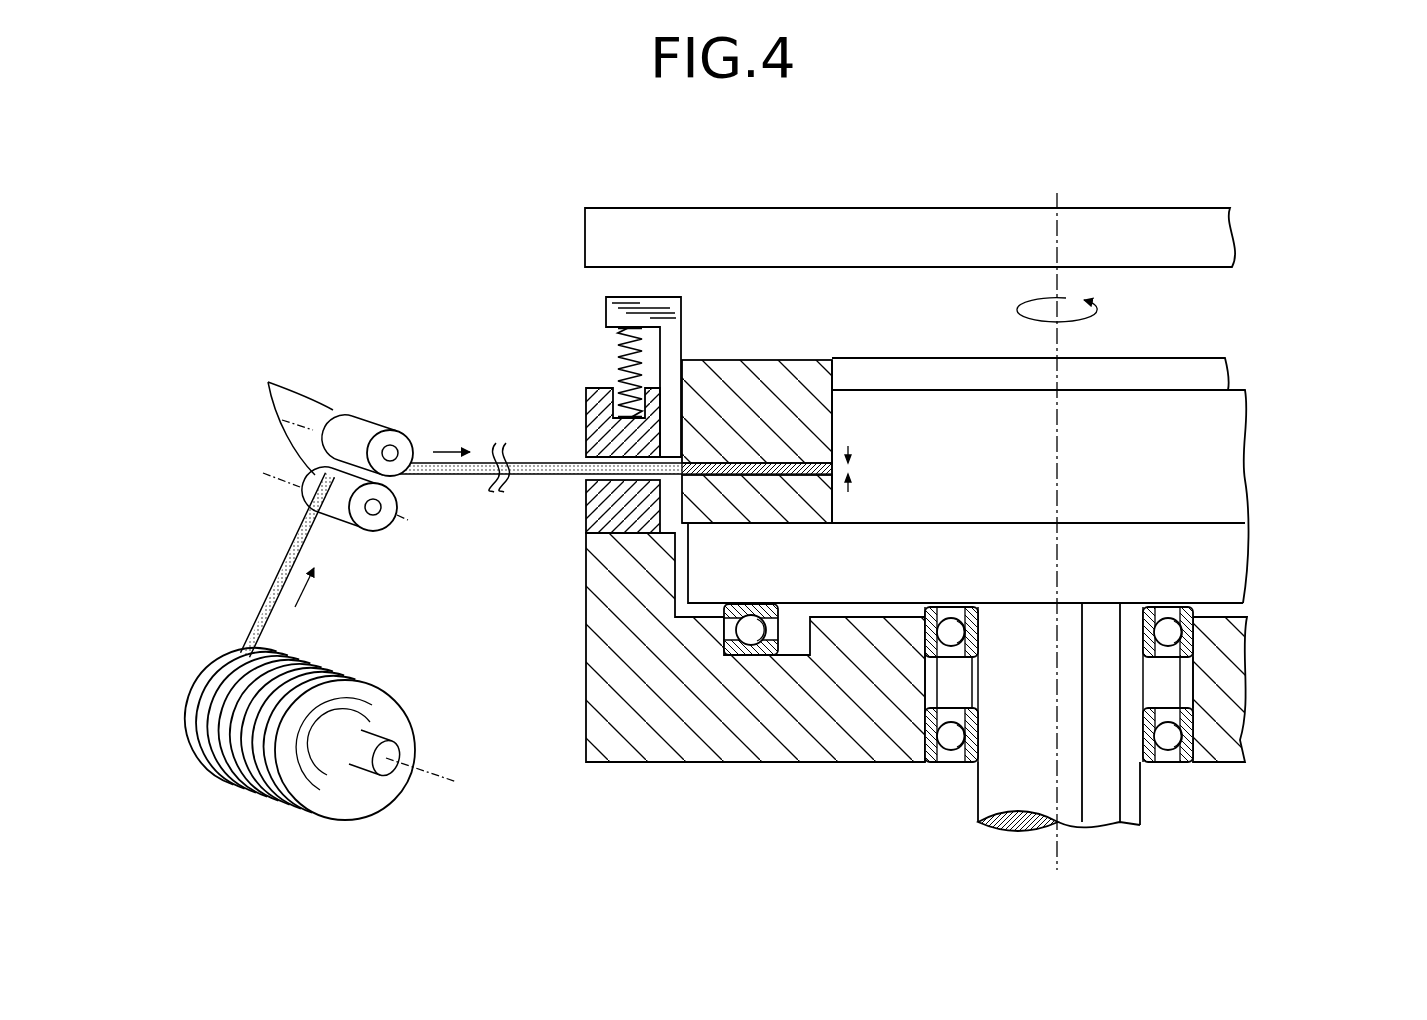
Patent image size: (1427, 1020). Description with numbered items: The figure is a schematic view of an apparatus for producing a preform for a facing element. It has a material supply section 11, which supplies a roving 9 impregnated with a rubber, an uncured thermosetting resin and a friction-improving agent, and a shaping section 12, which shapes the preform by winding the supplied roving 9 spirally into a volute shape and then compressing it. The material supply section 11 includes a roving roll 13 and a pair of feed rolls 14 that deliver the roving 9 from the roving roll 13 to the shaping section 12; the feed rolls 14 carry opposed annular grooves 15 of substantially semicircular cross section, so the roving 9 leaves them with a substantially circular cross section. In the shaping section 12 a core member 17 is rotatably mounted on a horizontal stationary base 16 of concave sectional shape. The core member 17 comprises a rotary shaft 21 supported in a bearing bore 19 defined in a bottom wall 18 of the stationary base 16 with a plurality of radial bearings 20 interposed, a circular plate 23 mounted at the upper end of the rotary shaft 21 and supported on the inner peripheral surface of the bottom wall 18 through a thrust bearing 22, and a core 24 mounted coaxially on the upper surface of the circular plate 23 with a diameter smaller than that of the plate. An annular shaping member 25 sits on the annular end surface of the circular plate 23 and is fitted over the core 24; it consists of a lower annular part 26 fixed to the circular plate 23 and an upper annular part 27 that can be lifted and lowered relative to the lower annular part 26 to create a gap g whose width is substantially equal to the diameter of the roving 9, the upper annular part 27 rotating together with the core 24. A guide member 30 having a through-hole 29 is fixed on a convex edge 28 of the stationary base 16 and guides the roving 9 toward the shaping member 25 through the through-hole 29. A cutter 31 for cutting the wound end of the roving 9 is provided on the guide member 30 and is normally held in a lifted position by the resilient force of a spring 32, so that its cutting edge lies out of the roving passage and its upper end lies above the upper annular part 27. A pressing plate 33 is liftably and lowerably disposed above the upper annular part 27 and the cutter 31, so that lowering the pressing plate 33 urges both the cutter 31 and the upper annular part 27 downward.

The roving 9 is at (280, 578).
The material supply section 11 is at (334, 637).
The shaping section 12 is at (764, 843).
The roving roll 13 is at (387, 787).
The feed rolls 14 is at (286, 408).
The annular grooves 15 is at (352, 420).
The stationary base 16 is at (648, 770).
The core member 17 is at (1256, 448).
The bottom wall 18 is at (858, 735).
The bearing bore 19 is at (1172, 673).
The radial bearings 20 is at (962, 730).
The rotary shaft 21 is at (1093, 810).
The thrust bearing 22 is at (752, 630).
The circular plate 23 is at (1215, 563).
The core 24 is at (1213, 420).
The annular shaping member 25 is at (766, 350).
The lower annular part 26 is at (767, 513).
The upper annular part 27 is at (805, 385).
The convex edge 28 is at (607, 570).
The through-hole 29 is at (610, 471).
The guide member 30 is at (586, 415).
The cutter 31 is at (673, 378).
The spring 32 is at (617, 345).
The pressing plate 33 is at (878, 227).
The gap g is at (856, 470).